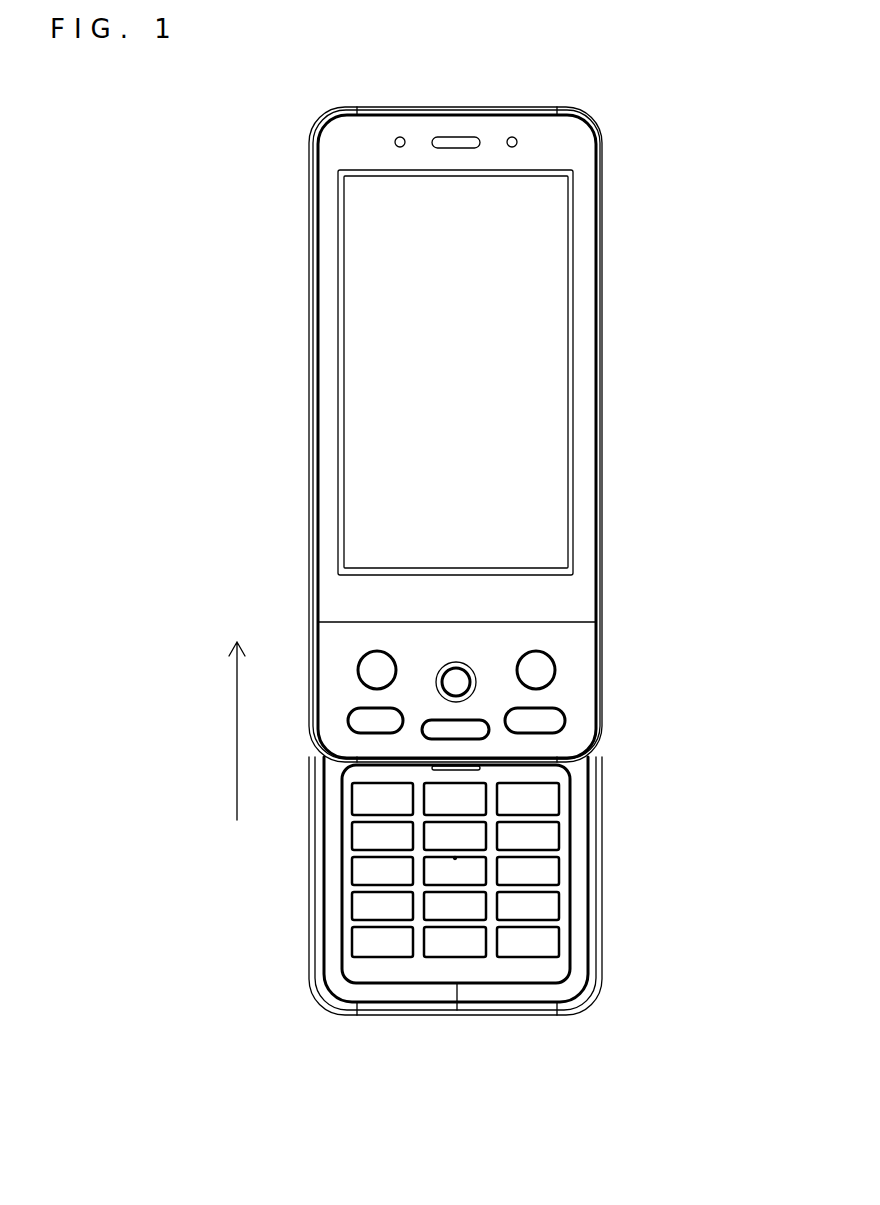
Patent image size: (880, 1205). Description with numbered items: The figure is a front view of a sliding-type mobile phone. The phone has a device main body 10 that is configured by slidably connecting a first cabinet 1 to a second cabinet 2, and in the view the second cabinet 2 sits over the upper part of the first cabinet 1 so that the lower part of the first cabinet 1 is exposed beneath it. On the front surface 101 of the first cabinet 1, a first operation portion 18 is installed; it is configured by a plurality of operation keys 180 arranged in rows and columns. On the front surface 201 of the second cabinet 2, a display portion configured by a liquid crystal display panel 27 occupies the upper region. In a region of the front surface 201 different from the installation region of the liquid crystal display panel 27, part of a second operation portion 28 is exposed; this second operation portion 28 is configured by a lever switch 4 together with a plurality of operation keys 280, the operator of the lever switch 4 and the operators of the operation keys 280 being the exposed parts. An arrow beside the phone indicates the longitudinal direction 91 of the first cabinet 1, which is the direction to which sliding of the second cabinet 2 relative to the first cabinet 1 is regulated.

The device main body 10 is at (620, 145).
The first cabinet 1 is at (590, 1000).
The second cabinet 2 is at (600, 243).
The liquid crystal display panel 27 is at (535, 405).
The second operation portion 28 is at (564, 679).
The operation key 280 is at (536, 672).
The lever switch 4 is at (457, 680).
The first operation portion 18 is at (565, 874).
The operation key 180 is at (544, 803).
The front surface of the second cabinet 201 is at (330, 610).
The front surface of the first cabinet 101 is at (328, 942).
The longitudinal direction 91 is at (237, 748).